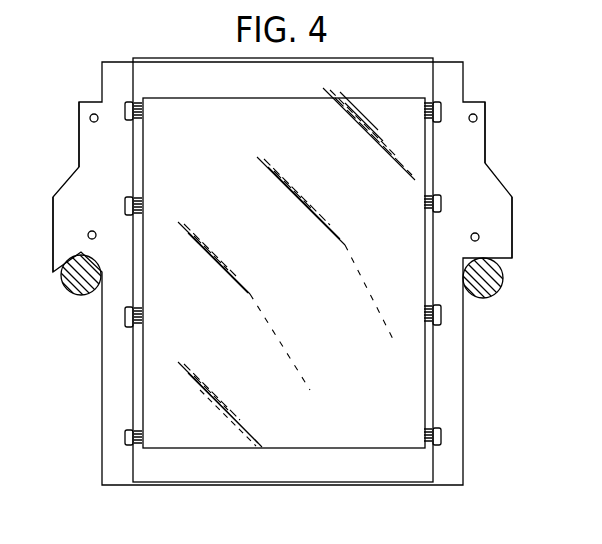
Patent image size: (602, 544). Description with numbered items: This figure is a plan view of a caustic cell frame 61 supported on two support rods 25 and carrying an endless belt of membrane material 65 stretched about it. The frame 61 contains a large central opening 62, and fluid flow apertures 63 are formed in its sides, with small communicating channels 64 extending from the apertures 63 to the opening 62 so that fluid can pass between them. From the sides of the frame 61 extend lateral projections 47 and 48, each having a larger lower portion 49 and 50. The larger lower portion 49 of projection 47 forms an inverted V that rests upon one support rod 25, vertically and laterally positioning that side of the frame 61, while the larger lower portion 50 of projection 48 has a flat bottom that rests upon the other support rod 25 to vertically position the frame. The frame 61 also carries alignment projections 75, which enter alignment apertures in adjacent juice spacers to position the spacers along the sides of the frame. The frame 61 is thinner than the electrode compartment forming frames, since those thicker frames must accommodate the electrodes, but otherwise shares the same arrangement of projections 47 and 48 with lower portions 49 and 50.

The support rod 25 is at (70, 284).
The lateral projection 47 is at (87, 146).
The lateral projection 48 is at (485, 149).
The larger lower portion 49 is at (53, 233).
The larger lower portion 50 is at (513, 222).
The caustic cell frame 61 is at (102, 80).
The central opening 62 is at (289, 106).
The fluid flow aperture 63 is at (123, 313).
The communicating channel 64 is at (135, 202).
The membrane material 65 is at (396, 68).
The alignment projection 75 is at (90, 117).